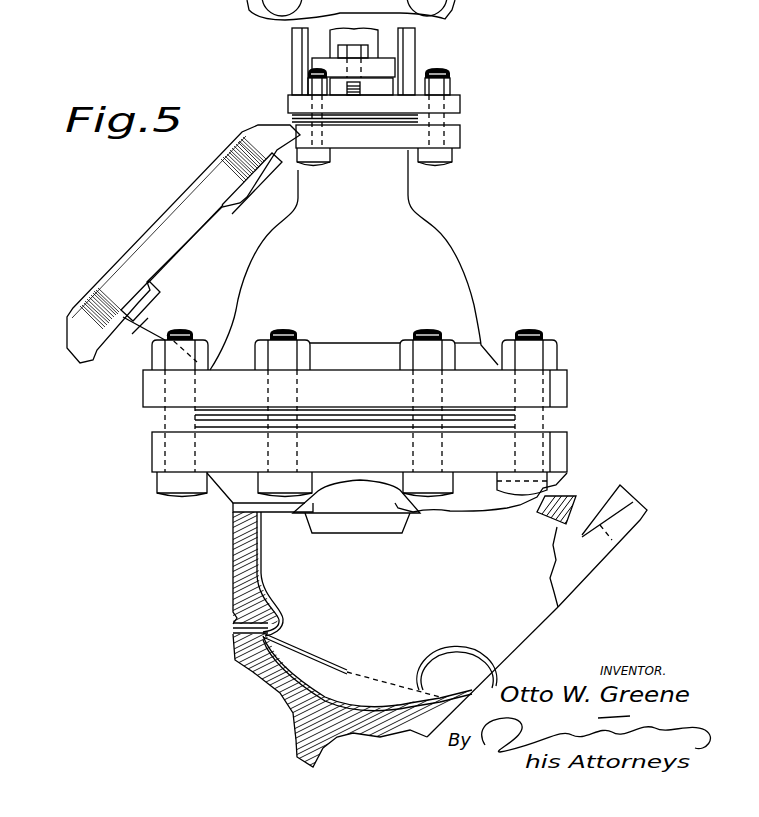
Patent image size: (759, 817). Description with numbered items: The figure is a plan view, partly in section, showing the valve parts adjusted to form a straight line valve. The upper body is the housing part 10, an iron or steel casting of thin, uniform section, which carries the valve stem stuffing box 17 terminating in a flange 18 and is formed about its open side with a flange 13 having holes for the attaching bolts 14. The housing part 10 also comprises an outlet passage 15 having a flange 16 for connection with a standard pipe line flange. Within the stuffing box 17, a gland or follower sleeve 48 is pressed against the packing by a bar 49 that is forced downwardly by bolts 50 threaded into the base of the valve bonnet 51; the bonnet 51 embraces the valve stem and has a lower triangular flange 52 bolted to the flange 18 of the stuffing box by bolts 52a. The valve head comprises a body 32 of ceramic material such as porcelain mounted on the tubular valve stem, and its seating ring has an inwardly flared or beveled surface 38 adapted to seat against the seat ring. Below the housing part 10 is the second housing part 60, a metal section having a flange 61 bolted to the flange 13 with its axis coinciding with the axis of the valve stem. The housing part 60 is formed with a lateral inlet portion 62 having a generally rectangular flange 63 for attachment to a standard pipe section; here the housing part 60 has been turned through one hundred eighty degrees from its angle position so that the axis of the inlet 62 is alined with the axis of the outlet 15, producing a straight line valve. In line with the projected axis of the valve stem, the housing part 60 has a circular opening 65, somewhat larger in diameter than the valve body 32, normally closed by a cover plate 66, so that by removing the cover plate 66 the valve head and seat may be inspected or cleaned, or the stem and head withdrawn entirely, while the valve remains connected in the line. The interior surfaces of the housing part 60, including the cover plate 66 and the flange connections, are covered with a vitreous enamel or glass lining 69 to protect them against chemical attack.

The housing part 10 is at (464, 263).
The flange 13 is at (567, 376).
The attaching bolts 14 is at (177, 333).
The outlet passage 15 is at (97, 352).
The flange 16 is at (68, 324).
The valve stem stuffing box 17 is at (400, 178).
The flange 18 is at (462, 131).
The valve head body 32 is at (372, 525).
The beveled surface 38 is at (378, 25).
The gland or follower sleeve 48 is at (384, 82).
The bar 49 is at (396, 68).
The bolts 50 is at (346, 45).
The valve bonnet 51 is at (296, 42).
The lower triangular flange 52 is at (462, 101).
The bolts 52a is at (308, 73).
The housing part 60 is at (234, 565).
The flange 61 is at (567, 442).
The lateral inlet portion 62 is at (566, 515).
The flange 63 is at (622, 489).
The circular opening 65 is at (288, 647).
The cover plate 66 is at (232, 648).
The vitreous enamel or glass lining 69 is at (557, 518).